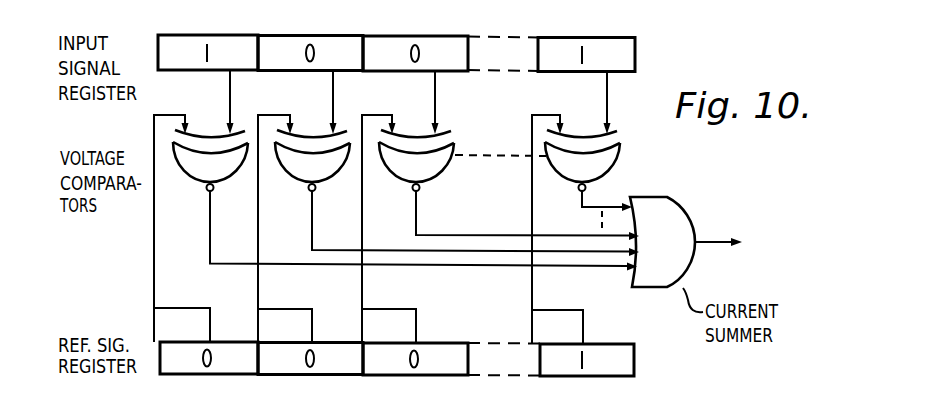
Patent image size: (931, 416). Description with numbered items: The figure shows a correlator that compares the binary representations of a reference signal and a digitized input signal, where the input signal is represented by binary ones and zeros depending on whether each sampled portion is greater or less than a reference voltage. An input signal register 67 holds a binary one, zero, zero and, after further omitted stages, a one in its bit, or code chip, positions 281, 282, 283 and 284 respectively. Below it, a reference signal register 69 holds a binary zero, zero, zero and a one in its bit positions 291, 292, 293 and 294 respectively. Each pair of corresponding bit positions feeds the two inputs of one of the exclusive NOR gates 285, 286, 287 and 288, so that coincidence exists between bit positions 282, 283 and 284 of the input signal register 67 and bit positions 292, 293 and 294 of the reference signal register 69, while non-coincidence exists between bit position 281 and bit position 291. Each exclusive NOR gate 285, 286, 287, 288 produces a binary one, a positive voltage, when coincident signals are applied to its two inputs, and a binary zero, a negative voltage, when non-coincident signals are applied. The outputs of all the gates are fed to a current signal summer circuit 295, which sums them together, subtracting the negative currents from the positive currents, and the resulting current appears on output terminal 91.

The input signal register 67 is at (643, 49).
The bit position of input signal register 281 is at (223, 35).
The bit position of input signal register 282 is at (333, 36).
The bit position of input signal register 283 is at (428, 36).
The bit position of input signal register 284 is at (605, 37).
The reference signal register 69 is at (153, 385).
The bit position of reference signal register 291 is at (219, 379).
The bit position of reference signal register 292 is at (324, 379).
The bit position of reference signal register 293 is at (433, 379).
The bit position of reference signal register 294 is at (634, 362).
The exclusive NOR gate 285 is at (190, 177).
The exclusive NOR gate 286 is at (293, 177).
The exclusive NOR gate 287 is at (396, 177).
The exclusive NOR gate 288 is at (620, 162).
The current signal summer circuit 295 is at (648, 288).
The output terminal 91 is at (713, 236).